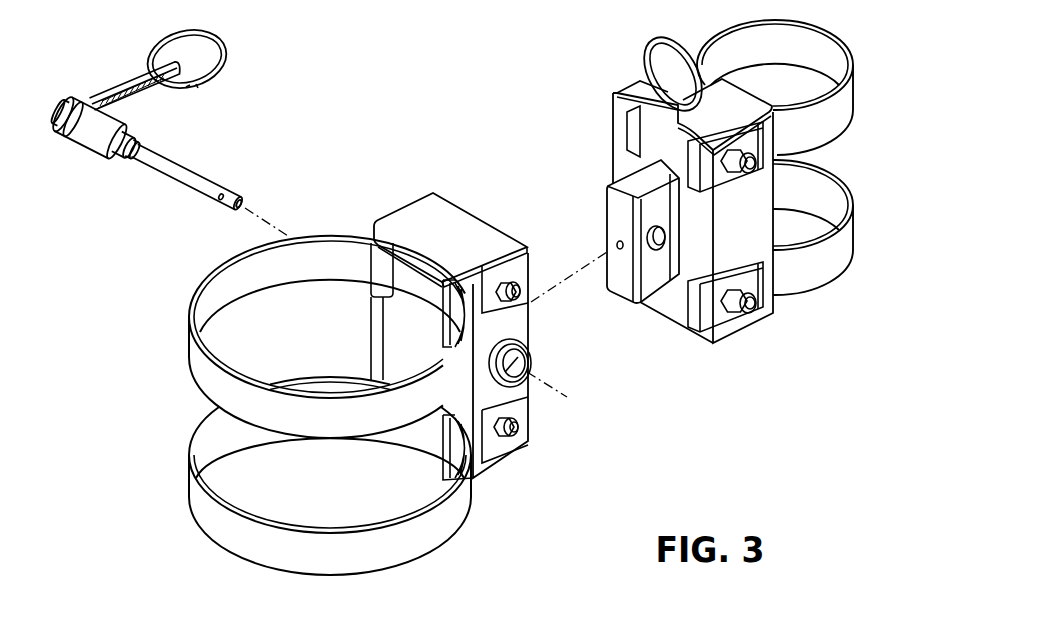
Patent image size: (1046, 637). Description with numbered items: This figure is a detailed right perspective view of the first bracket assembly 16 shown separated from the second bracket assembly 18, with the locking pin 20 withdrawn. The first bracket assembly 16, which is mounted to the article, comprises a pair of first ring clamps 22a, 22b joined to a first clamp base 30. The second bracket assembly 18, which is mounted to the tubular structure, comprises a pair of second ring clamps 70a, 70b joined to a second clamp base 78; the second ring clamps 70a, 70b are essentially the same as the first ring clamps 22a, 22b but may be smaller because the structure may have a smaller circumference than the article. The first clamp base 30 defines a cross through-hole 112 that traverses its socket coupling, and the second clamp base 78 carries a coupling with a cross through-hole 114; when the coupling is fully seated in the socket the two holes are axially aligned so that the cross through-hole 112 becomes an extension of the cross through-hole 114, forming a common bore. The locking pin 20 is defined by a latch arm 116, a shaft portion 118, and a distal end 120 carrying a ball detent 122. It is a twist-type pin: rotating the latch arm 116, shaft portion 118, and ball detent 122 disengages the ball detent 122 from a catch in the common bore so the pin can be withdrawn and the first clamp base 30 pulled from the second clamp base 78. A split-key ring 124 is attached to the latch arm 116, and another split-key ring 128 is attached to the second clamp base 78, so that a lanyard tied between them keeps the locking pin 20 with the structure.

The first bracket assembly 16 is at (345, 168).
The second bracket assembly 18 is at (615, 61).
The locking pin 20 is at (106, 72).
The first ring clamp 22a is at (190, 338).
The first ring clamp 22b is at (192, 496).
The first clamp base 30 is at (457, 218).
The second ring clamp 70a is at (853, 60).
The second ring clamp 70b is at (851, 224).
The second clamp base 78 is at (677, 303).
The cross through-hole 112 is at (516, 379).
The cross through-hole 114 is at (661, 252).
The latch arm 116 is at (152, 97).
The shaft portion 118 is at (158, 178).
The distal end 120 is at (256, 203).
The ball detent 122 is at (212, 206).
The split-key ring 124 is at (227, 50).
The split-key ring 128 is at (622, 90).